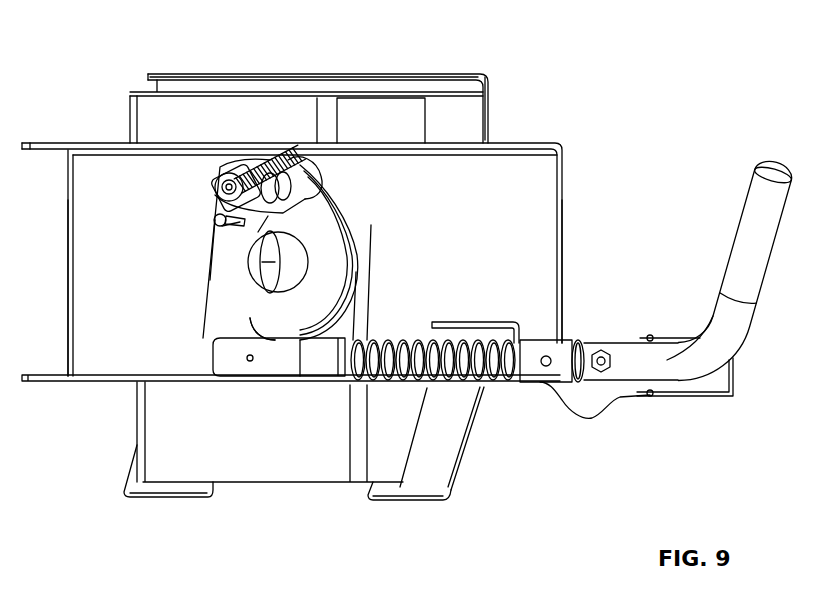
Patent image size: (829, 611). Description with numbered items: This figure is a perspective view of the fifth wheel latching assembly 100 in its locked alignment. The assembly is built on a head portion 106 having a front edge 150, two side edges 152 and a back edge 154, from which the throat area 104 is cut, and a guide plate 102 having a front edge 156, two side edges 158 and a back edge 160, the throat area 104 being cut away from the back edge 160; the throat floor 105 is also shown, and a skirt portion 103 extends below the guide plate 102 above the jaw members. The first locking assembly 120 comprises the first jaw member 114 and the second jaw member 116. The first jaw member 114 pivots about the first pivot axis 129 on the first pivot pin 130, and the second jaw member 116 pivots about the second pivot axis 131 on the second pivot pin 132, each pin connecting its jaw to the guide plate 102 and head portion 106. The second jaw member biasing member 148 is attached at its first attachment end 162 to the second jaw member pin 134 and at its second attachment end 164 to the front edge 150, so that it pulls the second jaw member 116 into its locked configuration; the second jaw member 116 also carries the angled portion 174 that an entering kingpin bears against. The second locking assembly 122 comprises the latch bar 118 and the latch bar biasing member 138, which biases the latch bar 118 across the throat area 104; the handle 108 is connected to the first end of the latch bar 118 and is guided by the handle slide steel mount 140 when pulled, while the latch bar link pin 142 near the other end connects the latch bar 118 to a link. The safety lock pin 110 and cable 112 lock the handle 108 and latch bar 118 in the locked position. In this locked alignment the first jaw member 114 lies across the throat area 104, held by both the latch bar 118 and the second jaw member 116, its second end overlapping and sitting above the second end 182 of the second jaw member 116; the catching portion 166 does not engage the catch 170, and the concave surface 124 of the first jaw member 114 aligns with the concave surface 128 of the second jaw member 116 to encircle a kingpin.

The latching assembly 100 is at (84, 48).
The guide plate 102 is at (435, 96).
The skirt portion 103 is at (360, 318).
The throat area 104 is at (320, 485).
The throat floor 105 is at (242, 441).
The head portion 106 is at (85, 180).
The handle 108 is at (752, 224).
The safety lock pin 110 is at (734, 363).
The cable 112 is at (618, 397).
The first jaw member 114 is at (357, 264).
The second jaw member 116 is at (200, 262).
The latch bar 118 is at (308, 368).
The first locking assembly 120 is at (172, 221).
The second locking assembly 122 is at (497, 407).
The concave surface 124 is at (300, 260).
The concave surface 128 is at (255, 262).
The first pivot axis 129 is at (237, 172).
The first pivot pin 130 is at (291, 189).
The second pivot axis 131 is at (215, 187).
The second pivot pin 132 is at (233, 175).
The second jaw member pin 134 is at (214, 216).
The latch bar biasing member 138 is at (482, 380).
The handle slide steel mount 140 is at (515, 320).
The latch bar link pin 142 is at (250, 360).
The second jaw member biasing member 148 is at (298, 196).
The front edge 150 is at (106, 146).
The side edges 152 is at (68, 252).
The back edge 154 is at (50, 382).
The front edge 156 is at (402, 74).
The side edges 158 is at (487, 84).
The back edge 160 is at (160, 498).
The first attachment end 162 is at (230, 226).
The second attachment end 164 is at (290, 155).
The catching portion 166 is at (283, 213).
The catch 170 is at (270, 214).
The angled portion 174 is at (282, 320).
The second end 182 is at (215, 320).